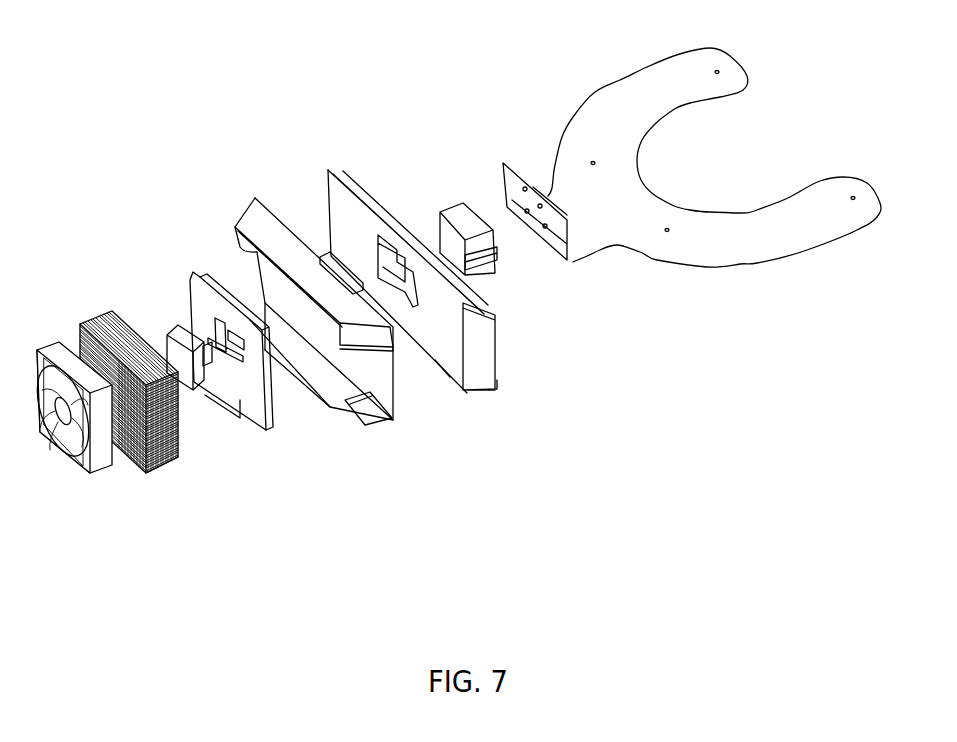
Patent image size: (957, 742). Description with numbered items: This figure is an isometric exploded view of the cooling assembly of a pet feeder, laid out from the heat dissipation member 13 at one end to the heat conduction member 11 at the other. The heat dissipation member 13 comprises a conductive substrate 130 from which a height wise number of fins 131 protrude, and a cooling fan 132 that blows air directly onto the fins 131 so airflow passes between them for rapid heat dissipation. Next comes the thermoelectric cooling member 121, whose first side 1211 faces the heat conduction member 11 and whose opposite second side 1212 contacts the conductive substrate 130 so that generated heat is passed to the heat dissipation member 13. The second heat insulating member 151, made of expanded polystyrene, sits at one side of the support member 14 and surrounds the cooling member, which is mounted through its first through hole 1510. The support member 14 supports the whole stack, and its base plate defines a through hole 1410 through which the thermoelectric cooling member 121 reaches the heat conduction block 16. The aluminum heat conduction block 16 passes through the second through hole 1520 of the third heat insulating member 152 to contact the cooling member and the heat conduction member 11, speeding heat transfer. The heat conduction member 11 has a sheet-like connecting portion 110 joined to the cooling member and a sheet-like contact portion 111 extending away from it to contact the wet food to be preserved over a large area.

The heat conduction member 11 is at (768, 388).
The connecting portion 110 is at (572, 262).
The contact portion 111 is at (620, 213).
The heat dissipation member 13 is at (222, 562).
The conductive substrate 130 is at (177, 458).
The fins 131 is at (148, 467).
The cooling fan 132 is at (96, 486).
The thermoelectric cooling member 121 is at (166, 348).
The first side 1211 is at (192, 326).
The second side 1212 is at (215, 432).
The first through hole 1510 is at (228, 322).
The second heat insulating member 151 is at (262, 345).
The through hole 1410 is at (363, 412).
The support member 14 is at (372, 370).
The second through hole 1520 is at (410, 264).
The heat conduction block 16 is at (490, 273).
The third heat insulating member 152 is at (450, 333).